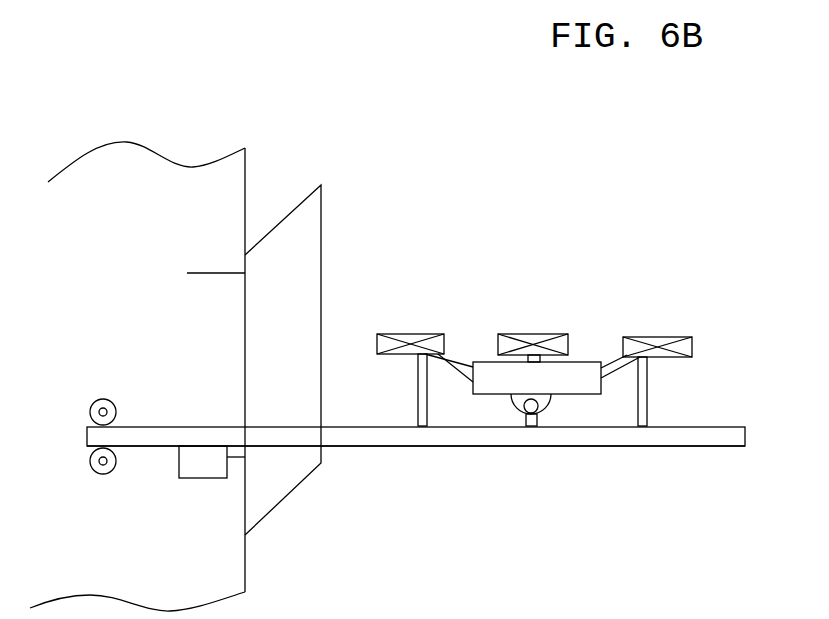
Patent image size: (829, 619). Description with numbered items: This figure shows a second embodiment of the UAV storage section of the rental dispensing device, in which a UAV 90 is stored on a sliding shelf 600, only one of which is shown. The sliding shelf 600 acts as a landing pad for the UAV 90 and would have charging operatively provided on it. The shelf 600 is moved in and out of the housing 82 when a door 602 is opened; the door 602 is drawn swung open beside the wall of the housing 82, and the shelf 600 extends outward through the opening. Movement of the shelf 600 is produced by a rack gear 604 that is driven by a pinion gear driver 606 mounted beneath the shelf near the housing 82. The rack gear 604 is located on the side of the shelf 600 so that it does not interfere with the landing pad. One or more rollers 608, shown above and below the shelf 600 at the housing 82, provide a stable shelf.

The housing 82 is at (98, 559).
The UAV 90 is at (592, 295).
The sliding shelf 600 is at (466, 473).
The door 602 is at (280, 313).
The rack gear 604 is at (630, 446).
The pinion gear driver 606 is at (203, 463).
The rollers 608 is at (102, 397).